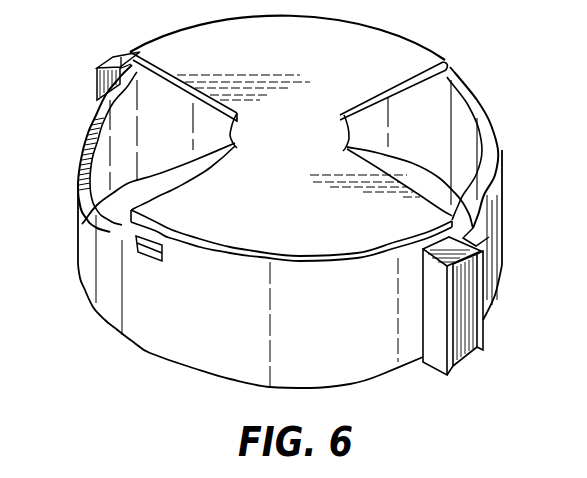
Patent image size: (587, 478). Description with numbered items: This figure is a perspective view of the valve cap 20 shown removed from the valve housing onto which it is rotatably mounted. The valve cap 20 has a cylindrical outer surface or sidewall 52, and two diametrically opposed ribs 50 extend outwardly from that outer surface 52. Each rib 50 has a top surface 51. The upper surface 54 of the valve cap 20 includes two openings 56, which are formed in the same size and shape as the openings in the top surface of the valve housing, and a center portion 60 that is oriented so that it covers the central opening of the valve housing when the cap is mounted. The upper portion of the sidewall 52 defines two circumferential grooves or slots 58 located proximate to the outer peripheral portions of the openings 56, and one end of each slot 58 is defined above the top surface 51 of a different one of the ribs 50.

The valve cap 20 is at (112, 326).
The ribs 50 is at (487, 322).
The top surface of rib 51 is at (115, 63).
The outer surface (sidewall) 52 is at (326, 332).
The upper surface 54 is at (325, 59).
The openings 56 is at (106, 150).
The circumferential grooves or slots 58 is at (138, 235).
The center portion 60 is at (305, 146).